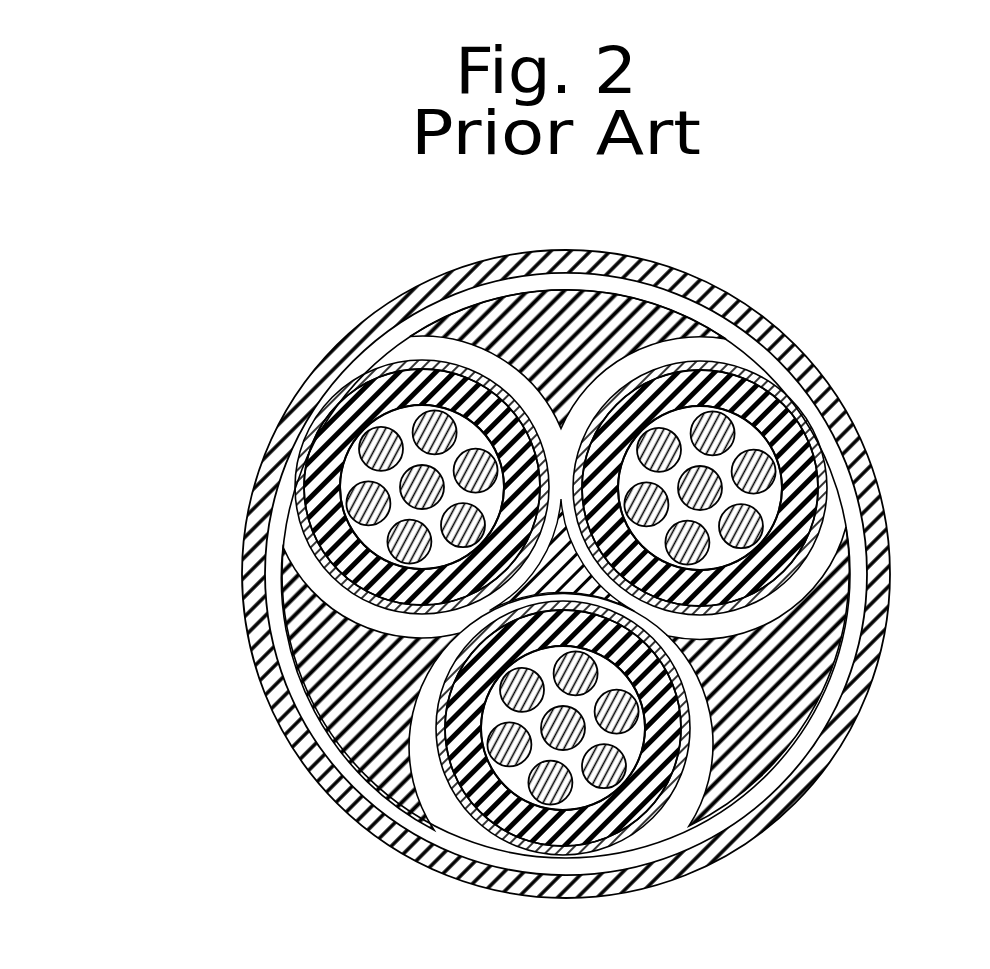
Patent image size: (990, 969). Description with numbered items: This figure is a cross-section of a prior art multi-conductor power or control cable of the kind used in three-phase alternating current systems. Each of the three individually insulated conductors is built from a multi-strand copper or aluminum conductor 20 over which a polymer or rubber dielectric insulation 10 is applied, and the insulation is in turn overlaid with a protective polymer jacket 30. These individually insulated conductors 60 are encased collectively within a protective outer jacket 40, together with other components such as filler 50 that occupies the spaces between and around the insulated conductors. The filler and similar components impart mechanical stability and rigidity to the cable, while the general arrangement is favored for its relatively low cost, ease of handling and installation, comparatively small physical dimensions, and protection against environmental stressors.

The dielectric insulation 10 is at (800, 418).
The conductor 20 is at (355, 425).
The protective polymer jacket 30 is at (332, 562).
The protective outer jacket 40 is at (387, 297).
The filler 50 is at (640, 307).
The individual conductors 60 is at (437, 829).